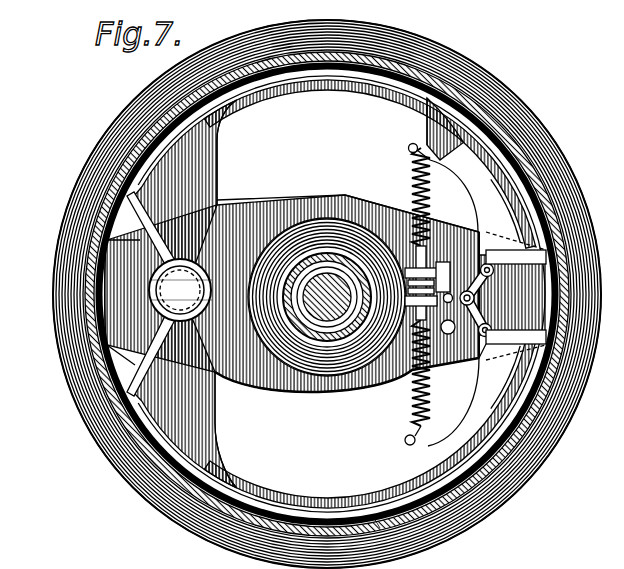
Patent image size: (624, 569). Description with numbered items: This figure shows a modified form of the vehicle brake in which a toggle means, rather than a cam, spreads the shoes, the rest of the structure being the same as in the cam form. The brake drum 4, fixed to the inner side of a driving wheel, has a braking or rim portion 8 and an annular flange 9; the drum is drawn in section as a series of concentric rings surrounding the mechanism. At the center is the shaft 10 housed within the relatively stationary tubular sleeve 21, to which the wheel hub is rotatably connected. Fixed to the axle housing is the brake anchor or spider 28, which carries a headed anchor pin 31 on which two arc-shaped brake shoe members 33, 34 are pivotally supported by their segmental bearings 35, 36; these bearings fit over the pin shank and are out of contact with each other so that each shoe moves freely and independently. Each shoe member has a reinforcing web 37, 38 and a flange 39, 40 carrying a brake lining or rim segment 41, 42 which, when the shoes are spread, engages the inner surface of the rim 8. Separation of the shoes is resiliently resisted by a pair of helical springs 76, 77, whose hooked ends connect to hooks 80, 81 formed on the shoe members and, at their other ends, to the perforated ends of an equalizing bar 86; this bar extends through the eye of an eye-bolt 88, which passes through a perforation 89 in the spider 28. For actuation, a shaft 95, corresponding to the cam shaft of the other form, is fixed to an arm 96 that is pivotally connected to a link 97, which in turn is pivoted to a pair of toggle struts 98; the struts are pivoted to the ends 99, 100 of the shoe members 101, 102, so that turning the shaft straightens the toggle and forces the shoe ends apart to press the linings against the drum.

The brake drum 4 is at (146, 86).
The braking or rim portion 8 is at (452, 85).
The annular flange 9 is at (405, 30).
The shaft 10 is at (300, 345).
The tubular sleeve 21 is at (337, 350).
The brake anchor or spider 28 is at (297, 200).
The anchor pin 31 is at (180, 290).
The brake shoe member 33 is at (140, 225).
The brake shoe member 34 is at (124, 357).
The segmental bearing 35 is at (160, 275).
The segmental bearing 36 is at (158, 308).
The reinforcing web 37 is at (212, 163).
The reinforcing web 38 is at (198, 423).
The flange 39 is at (265, 90).
The flange 40 is at (268, 490).
The brake lining or rim segment 41 is at (376, 82).
The brake lining or rim segment 42 is at (374, 518).
The helical spring 76 is at (412, 192).
The helical spring 77 is at (413, 406).
The hook 80 is at (408, 149).
The hook 81 is at (405, 441).
The equalizing bar 86 is at (418, 272).
The eye-bolt 88 is at (406, 276).
The perforation 89 is at (410, 296).
The shaft 95 is at (447, 365).
The arm 96 is at (490, 357).
The link 97 is at (448, 269).
The toggle struts 98 is at (477, 300).
The shoe member end 99 is at (516, 249).
The shoe member end 100 is at (516, 345).
The shoe member 101 is at (475, 259).
The shoe member 102 is at (512, 412).